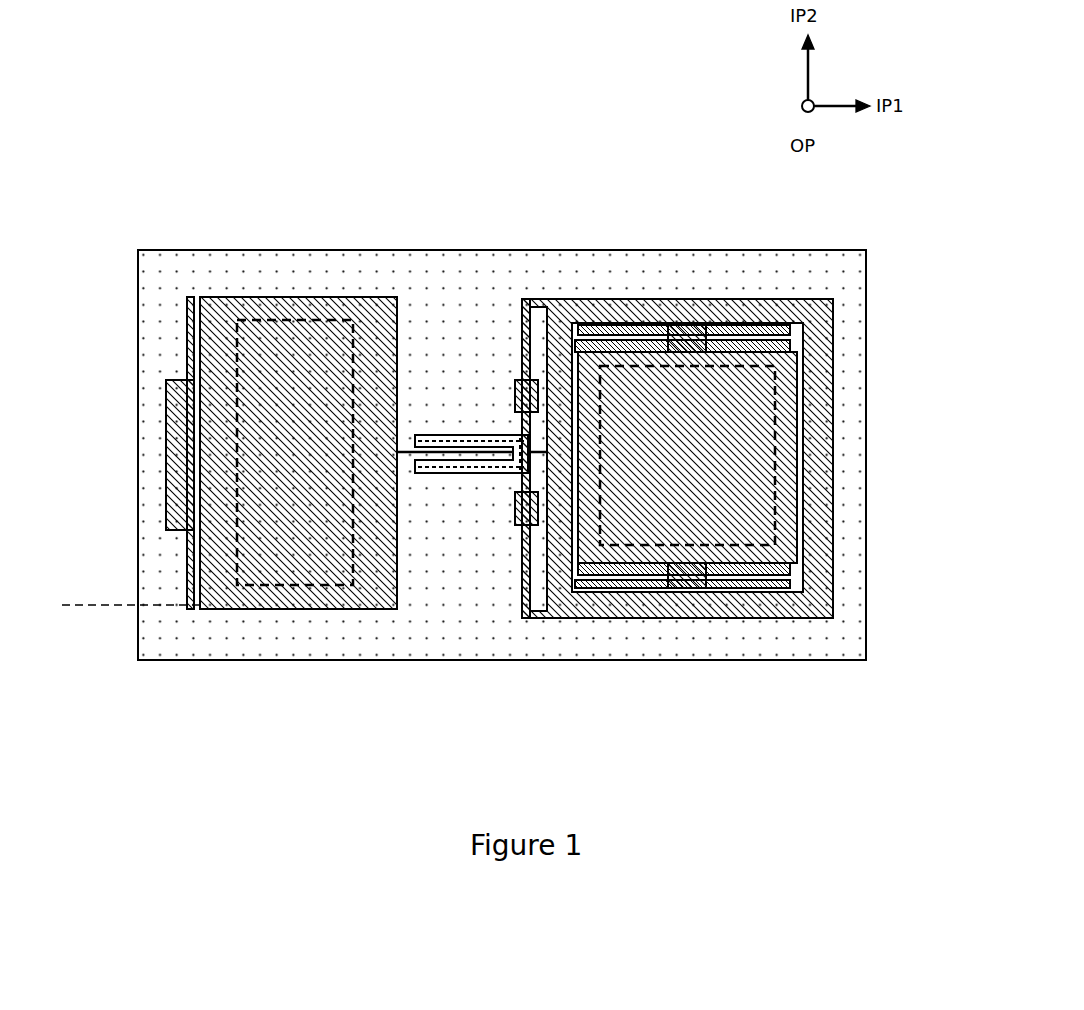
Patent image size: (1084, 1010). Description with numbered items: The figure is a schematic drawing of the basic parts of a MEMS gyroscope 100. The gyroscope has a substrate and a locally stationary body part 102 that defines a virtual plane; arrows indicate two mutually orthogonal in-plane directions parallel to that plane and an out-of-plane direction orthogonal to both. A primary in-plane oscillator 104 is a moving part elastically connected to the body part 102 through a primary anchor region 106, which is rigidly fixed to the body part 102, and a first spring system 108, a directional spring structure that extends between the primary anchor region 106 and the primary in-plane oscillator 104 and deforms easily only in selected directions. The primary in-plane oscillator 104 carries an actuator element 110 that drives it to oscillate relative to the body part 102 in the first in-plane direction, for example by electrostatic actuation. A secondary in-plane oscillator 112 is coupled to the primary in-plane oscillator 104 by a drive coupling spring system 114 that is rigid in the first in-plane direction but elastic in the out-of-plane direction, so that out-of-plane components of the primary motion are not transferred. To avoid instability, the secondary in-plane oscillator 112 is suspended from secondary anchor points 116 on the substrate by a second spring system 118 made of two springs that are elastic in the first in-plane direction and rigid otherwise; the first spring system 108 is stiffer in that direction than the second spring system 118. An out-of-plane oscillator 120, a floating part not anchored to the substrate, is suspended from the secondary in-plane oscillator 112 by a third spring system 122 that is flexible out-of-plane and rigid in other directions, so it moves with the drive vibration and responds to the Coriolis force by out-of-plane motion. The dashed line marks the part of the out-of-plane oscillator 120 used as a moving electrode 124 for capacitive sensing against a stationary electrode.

The MEMS gyroscope 100 is at (212, 241).
The body part 102 is at (672, 256).
The primary in-plane oscillator 104 is at (304, 297).
The primary anchor region 106 is at (176, 465).
The first spring system 108 is at (187, 328).
The actuator element 110 is at (253, 325).
The secondary in-plane oscillator 112 is at (820, 328).
The drive coupling spring system 114 is at (428, 433).
The secondary anchor point 116 is at (515, 387).
The second spring system 118 is at (520, 313).
The out-of-plane oscillator 120 is at (790, 410).
The third spring system 122 is at (793, 573).
The moving electrode 124 is at (640, 538).